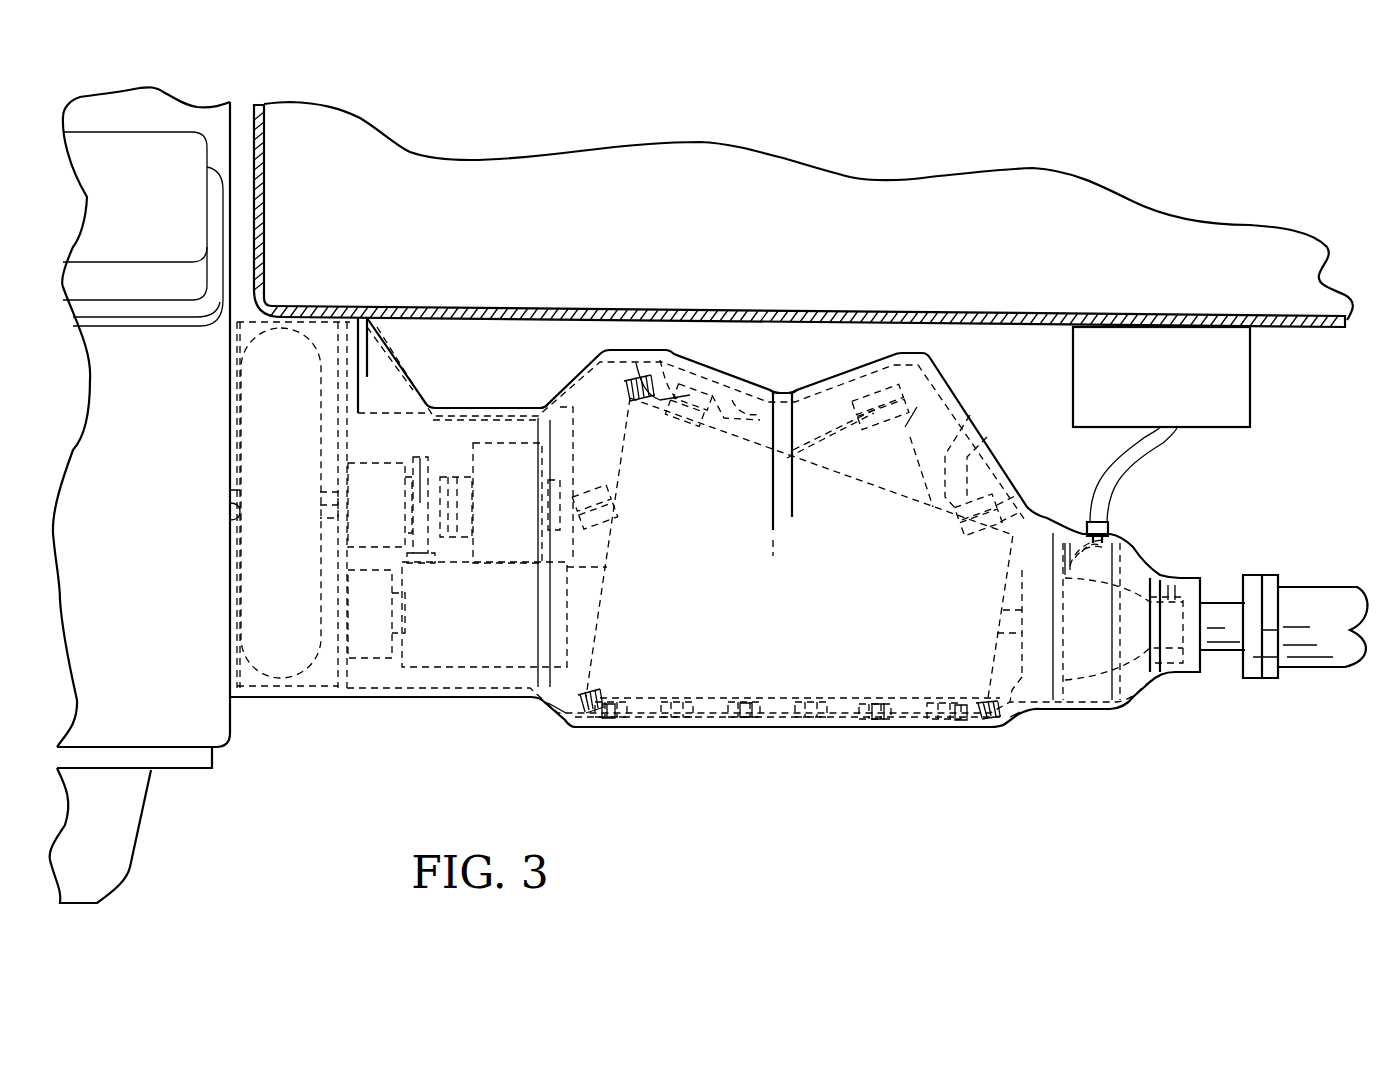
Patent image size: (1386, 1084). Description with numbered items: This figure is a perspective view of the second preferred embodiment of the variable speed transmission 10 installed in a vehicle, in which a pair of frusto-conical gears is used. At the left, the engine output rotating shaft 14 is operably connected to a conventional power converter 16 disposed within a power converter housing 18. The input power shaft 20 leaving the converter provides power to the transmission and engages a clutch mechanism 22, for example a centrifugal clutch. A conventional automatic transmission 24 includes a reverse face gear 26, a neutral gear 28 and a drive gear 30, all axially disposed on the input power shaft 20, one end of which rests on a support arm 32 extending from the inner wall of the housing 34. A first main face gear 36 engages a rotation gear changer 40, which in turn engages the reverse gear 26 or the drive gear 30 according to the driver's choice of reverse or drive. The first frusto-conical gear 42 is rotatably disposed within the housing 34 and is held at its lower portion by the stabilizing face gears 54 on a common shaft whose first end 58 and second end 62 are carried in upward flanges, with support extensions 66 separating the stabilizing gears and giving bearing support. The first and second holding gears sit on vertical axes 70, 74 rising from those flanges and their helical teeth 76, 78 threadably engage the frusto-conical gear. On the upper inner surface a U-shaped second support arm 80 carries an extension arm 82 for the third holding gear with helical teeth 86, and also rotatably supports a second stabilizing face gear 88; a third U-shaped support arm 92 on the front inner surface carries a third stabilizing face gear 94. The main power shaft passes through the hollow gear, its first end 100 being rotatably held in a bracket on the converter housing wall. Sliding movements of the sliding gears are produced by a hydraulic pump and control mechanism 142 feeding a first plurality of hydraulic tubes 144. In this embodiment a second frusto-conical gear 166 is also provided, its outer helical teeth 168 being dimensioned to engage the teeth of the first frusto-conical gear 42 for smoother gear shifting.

The variable speed transmission 10 is at (802, 660).
The engine output rotating shaft 14 is at (231, 547).
The power converter 16 is at (283, 670).
The power converter housing 18 is at (323, 678).
The input power shaft 20 is at (330, 513).
The clutch mechanism 22 is at (380, 462).
The automatic transmission 24 is at (445, 430).
The reverse face gear 26 is at (413, 385).
The neutral gear 28 is at (467, 475).
The drive gear 30 is at (508, 445).
The support arm 32 is at (573, 447).
The housing 34 is at (728, 400).
The first main face gear 36 is at (473, 650).
The rotation gear changer 40 is at (418, 560).
The first frusto-conical gear 42 is at (816, 600).
The stabilizing face gears 54 is at (707, 714).
The first end 58 is at (615, 720).
The second end 62 is at (958, 717).
The support extensions 66 is at (745, 720).
The vertical axis 70 is at (589, 720).
The vertical axis 74 is at (988, 720).
The helical teeth 76 is at (572, 698).
The helical teeth 78 is at (1010, 717).
The second support arm 80 is at (782, 400).
The extension arm 82 is at (640, 372).
The helical teeth 86 is at (623, 386).
The second stabilizing face gear 88 is at (690, 385).
The third support arm 92 is at (967, 443).
The third stabilizing face gear 94 is at (1000, 492).
The first end 100 is at (333, 687).
The hydraulic pump and control mechanism 142 is at (1250, 381).
The first plurality of hydraulic tubes 144 is at (1079, 530).
The second frusto-conical gear 166 is at (918, 430).
The outer helical teeth 168 is at (903, 405).